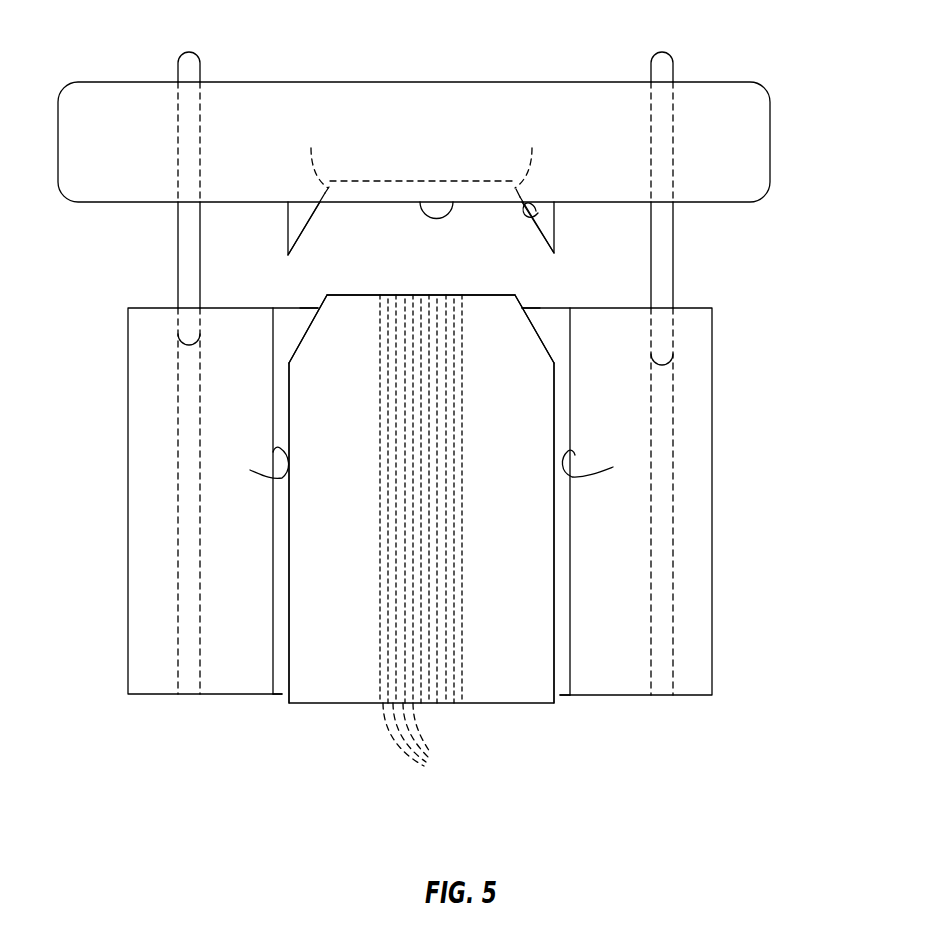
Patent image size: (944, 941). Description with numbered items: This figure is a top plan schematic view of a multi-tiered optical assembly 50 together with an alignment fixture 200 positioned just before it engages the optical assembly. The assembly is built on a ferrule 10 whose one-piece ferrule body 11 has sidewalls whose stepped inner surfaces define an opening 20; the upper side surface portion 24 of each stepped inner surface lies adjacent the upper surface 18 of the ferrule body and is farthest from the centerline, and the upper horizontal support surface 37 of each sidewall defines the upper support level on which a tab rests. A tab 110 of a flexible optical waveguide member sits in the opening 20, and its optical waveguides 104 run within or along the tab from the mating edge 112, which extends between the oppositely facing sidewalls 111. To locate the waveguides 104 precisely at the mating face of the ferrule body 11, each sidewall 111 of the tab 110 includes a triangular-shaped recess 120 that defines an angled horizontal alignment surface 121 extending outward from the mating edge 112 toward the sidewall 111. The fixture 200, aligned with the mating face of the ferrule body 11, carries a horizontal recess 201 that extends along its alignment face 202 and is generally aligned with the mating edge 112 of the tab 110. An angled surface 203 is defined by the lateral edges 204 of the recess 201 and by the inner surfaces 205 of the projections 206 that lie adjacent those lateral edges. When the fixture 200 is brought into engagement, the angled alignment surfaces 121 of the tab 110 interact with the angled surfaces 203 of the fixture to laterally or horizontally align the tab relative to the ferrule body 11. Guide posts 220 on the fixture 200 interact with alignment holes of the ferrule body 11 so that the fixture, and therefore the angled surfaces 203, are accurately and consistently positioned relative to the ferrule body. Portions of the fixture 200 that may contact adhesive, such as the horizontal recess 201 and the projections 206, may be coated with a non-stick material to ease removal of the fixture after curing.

The ferrule 10 is at (795, 512).
The ferrule body 11 is at (705, 595).
The upper surface 18 is at (703, 422).
The opening 20 is at (300, 238).
The upper side surface portion 24 is at (430, 465).
The upper horizontal support surface 37 is at (283, 696).
The multi-tiered optical assembly 50 is at (795, 338).
The optical waveguides 104 is at (424, 543).
The tab 110 is at (348, 694).
The sidewalls 111 is at (288, 530).
The mating edge 112 is at (340, 293).
The triangular-shaped recess 120 is at (298, 316).
The angled horizontal alignment surface 121 is at (296, 349).
The fixture 200 is at (515, 82).
The horizontal recess 201 is at (368, 182).
The alignment face 202 is at (452, 201).
The angled surface 203 is at (312, 216).
The lateral edges 204 is at (424, 151).
The inner surfaces 205 is at (538, 213).
The projections 206 is at (288, 215).
The guide posts 220 is at (178, 75).